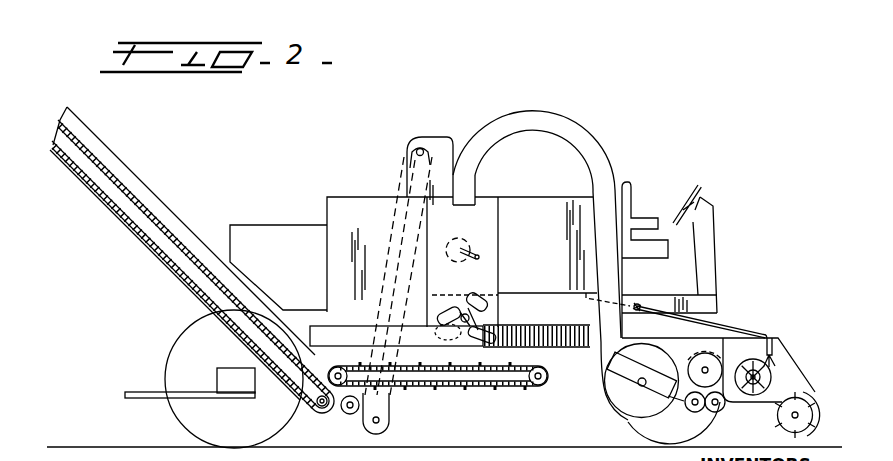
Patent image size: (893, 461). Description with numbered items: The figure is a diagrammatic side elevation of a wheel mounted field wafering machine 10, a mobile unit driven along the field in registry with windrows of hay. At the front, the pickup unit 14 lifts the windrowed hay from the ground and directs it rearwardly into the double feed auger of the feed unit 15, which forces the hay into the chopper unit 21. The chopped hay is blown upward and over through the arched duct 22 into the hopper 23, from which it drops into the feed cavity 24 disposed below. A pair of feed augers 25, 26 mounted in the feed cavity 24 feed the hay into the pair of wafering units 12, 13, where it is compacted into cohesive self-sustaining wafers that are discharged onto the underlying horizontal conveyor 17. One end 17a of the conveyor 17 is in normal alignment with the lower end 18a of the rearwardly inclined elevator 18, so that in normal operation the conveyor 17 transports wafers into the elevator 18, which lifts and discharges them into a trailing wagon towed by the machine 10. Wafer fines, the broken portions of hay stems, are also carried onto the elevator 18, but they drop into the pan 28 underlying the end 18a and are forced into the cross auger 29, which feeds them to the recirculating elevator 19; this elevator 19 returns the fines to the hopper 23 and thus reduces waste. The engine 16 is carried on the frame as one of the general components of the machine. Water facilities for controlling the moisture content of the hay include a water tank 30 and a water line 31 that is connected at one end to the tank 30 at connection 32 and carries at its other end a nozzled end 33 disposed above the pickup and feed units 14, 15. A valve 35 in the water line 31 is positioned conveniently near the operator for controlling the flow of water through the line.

The wheel mounted field wafering machine 10 is at (580, 117).
The wafering unit 12 is at (358, 323).
The wafering unit 13 is at (549, 325).
The pickup unit 14 is at (802, 403).
The feed unit 15 is at (752, 395).
The engine 16 is at (282, 234).
The horizontal conveyor 17 is at (469, 386).
The conveyor end 17a is at (343, 366).
The elevator 18 is at (172, 220).
The lower end of elevator 18a is at (327, 412).
The recirculating elevator 19 is at (405, 176).
The chopper unit 21 is at (645, 425).
The duct 22 is at (604, 157).
The hopper 23 is at (487, 198).
The feed cavity 24 is at (484, 295).
The feed auger 25 is at (492, 311).
The feed auger 26 is at (444, 312).
The pan 28 is at (297, 420).
The cross auger 29 is at (350, 414).
The water tank 30 is at (566, 198).
The water line 31 is at (725, 319).
The water line connection 32 is at (586, 297).
The nozzled end 33 is at (772, 338).
The valve 35 is at (641, 309).